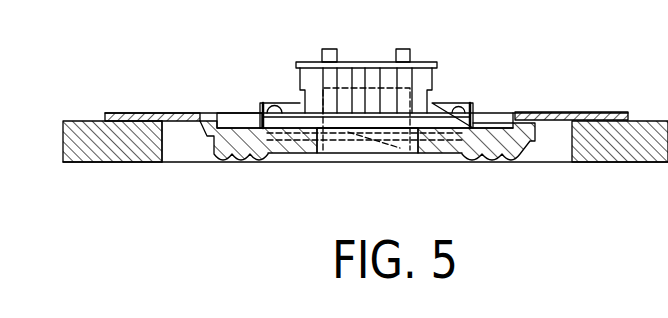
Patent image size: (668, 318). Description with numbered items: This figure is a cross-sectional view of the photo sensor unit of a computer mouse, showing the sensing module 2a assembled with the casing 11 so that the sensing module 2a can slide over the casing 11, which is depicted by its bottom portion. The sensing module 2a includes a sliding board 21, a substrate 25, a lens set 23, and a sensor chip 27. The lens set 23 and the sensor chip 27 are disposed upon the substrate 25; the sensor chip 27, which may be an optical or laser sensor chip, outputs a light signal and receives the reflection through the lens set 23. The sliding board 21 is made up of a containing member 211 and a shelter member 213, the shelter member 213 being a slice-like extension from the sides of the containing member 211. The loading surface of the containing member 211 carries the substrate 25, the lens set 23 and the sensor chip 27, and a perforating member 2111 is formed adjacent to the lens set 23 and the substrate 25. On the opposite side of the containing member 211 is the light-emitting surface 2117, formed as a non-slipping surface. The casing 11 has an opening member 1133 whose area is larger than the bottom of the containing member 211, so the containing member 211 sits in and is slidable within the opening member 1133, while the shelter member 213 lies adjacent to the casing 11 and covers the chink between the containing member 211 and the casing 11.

The casing 11 is at (652, 118).
The opening member 1133 is at (178, 162).
The sliding board 21 is at (364, 130).
The shelter member 213 is at (135, 113).
The light-emitting surface 2117 is at (282, 152).
The containing member 211 is at (302, 152).
The lens set 23 is at (380, 151).
The perforating member 2111 is at (432, 152).
The substrate 25 is at (443, 112).
The sensor chip 27 is at (423, 61).
The sensing module 2a is at (272, 78).